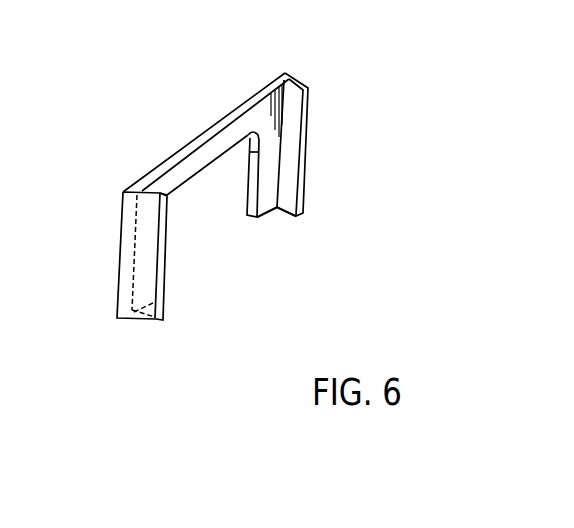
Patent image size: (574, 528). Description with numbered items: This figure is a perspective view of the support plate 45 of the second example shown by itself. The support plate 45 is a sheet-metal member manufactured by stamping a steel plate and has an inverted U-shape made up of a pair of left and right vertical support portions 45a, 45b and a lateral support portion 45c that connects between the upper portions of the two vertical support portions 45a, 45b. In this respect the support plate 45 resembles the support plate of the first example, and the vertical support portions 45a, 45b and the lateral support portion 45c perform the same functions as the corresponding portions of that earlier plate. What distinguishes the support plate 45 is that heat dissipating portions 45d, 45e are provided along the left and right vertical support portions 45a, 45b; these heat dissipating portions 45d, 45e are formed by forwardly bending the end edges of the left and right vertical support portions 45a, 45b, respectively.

The support plate 45 is at (248, 190).
The vertical support portion 45a is at (273, 208).
The vertical support portion 45b is at (160, 241).
The lateral support portion 45c is at (187, 165).
The heat dissipating portion 45d is at (307, 165).
The heat dissipating portion 45e is at (160, 263).